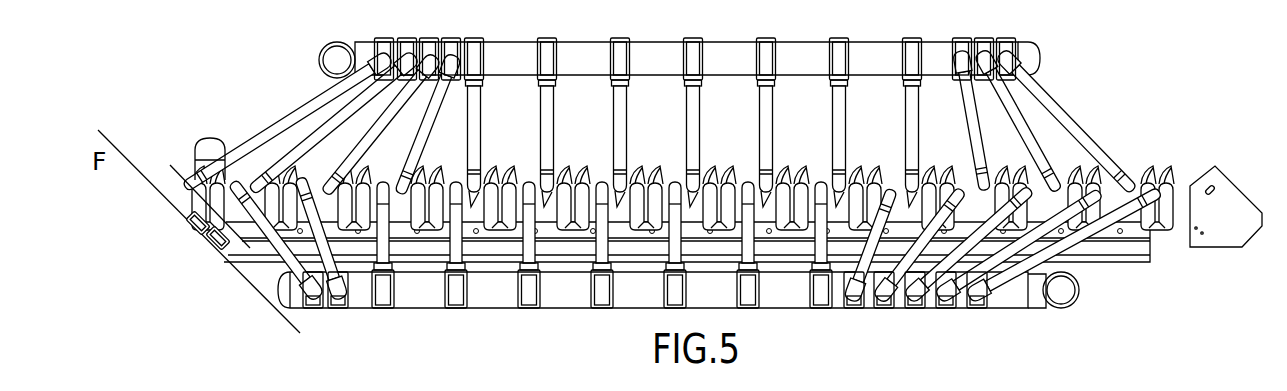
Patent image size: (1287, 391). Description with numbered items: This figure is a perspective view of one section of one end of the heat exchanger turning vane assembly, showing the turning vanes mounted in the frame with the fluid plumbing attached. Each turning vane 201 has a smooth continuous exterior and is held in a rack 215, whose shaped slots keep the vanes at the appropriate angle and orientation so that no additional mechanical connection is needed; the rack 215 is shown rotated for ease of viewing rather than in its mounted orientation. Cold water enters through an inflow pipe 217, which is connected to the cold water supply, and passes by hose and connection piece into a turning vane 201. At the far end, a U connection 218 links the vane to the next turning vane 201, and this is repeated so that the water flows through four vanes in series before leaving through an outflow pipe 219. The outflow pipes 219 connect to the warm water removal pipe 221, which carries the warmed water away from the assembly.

The turning vane 201 is at (1203, 170).
The rack 215 is at (253, 242).
The inflow pipe 217 is at (295, 117).
The U connection 218 is at (500, 236).
The outflow pipe 219 is at (598, 247).
The warm water removal pipe 221 is at (777, 300).